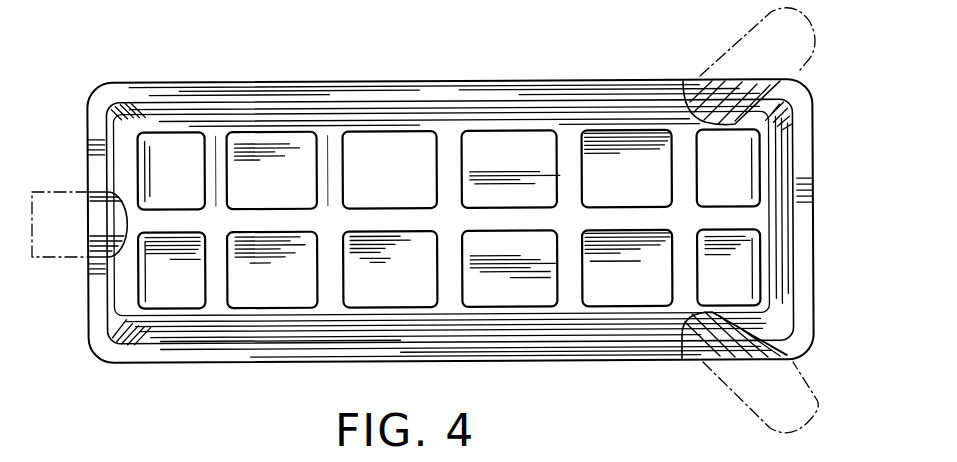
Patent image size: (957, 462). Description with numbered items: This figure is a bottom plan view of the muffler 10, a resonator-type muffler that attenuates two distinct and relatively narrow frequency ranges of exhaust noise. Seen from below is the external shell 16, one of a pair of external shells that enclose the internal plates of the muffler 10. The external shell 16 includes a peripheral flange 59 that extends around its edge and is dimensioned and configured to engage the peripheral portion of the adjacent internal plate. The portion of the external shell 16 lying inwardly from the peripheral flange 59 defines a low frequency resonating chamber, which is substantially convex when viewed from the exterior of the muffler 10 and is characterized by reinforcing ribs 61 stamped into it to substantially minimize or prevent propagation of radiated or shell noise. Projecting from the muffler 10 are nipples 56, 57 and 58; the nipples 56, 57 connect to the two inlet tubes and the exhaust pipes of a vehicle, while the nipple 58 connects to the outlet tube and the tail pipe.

The muffler 10 is at (157, 68).
The external shell 16 is at (487, 159).
The reinforcing ribs 61 is at (215, 150).
The nipple 56 is at (727, 383).
The nipple 57 is at (812, 63).
The nipple 58 is at (52, 258).
The peripheral flange 59 is at (200, 352).